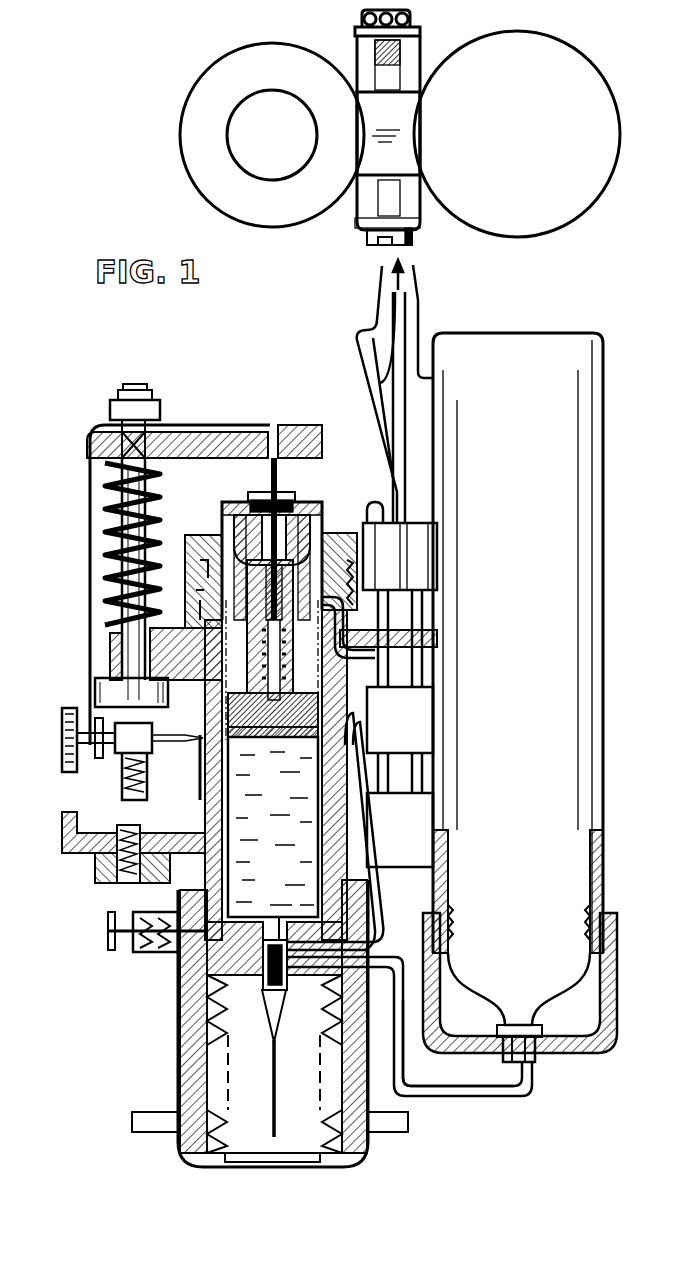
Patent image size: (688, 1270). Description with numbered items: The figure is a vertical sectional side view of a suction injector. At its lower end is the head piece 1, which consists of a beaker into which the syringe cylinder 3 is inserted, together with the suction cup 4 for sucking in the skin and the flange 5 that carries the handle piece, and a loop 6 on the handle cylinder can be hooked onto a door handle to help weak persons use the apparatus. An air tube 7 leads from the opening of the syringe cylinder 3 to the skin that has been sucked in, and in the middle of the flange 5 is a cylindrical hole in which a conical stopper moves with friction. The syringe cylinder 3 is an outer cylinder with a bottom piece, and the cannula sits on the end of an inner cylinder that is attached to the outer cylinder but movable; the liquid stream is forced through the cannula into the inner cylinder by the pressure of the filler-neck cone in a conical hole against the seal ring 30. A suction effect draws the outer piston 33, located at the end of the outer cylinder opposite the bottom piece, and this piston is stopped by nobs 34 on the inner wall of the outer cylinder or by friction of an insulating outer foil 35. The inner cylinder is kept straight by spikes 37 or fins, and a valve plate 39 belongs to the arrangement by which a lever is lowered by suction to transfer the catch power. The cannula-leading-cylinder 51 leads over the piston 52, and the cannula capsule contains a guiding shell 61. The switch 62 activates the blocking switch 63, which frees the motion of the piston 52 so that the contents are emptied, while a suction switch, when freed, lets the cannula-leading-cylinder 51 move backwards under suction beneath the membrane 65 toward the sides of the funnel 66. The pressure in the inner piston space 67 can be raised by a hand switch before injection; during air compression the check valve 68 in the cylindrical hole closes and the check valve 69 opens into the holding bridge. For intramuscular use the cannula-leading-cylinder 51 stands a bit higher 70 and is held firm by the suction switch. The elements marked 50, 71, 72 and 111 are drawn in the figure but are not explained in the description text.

The head piece 1 is at (228, 712).
The syringe cylinder 3 is at (270, 895).
The suction cup 4 is at (288, 985).
The flange 5 is at (225, 510).
The lower housing 6 is at (190, 1065).
The air tube 7 is at (266, 1005).
The seal ring 30 is at (230, 962).
The outer piston 33 is at (90, 474).
The nobs 34 is at (112, 693).
The insulating outer foil 35 is at (296, 425).
The spikes 37 is at (412, 237).
The valve plate 39 is at (108, 931).
The threaded spindle 50 is at (215, 740).
The cannula-leading-cylinder 51 is at (548, 898).
The piston 52 is at (247, 672).
The guiding shell 61 is at (200, 603).
The switch 62 is at (185, 578).
The blocking switch 63 is at (260, 545).
The membrane 65 is at (273, 500).
The funnel 66 is at (105, 534).
The inner piston space 67 is at (110, 870).
The check valve 68 is at (62, 746).
The check valve 69 is at (598, 868).
The higher position 70 is at (573, 1040).
The fitting 71 is at (525, 1062).
The tube 72 is at (475, 1086).
The cap 111 is at (290, 497).